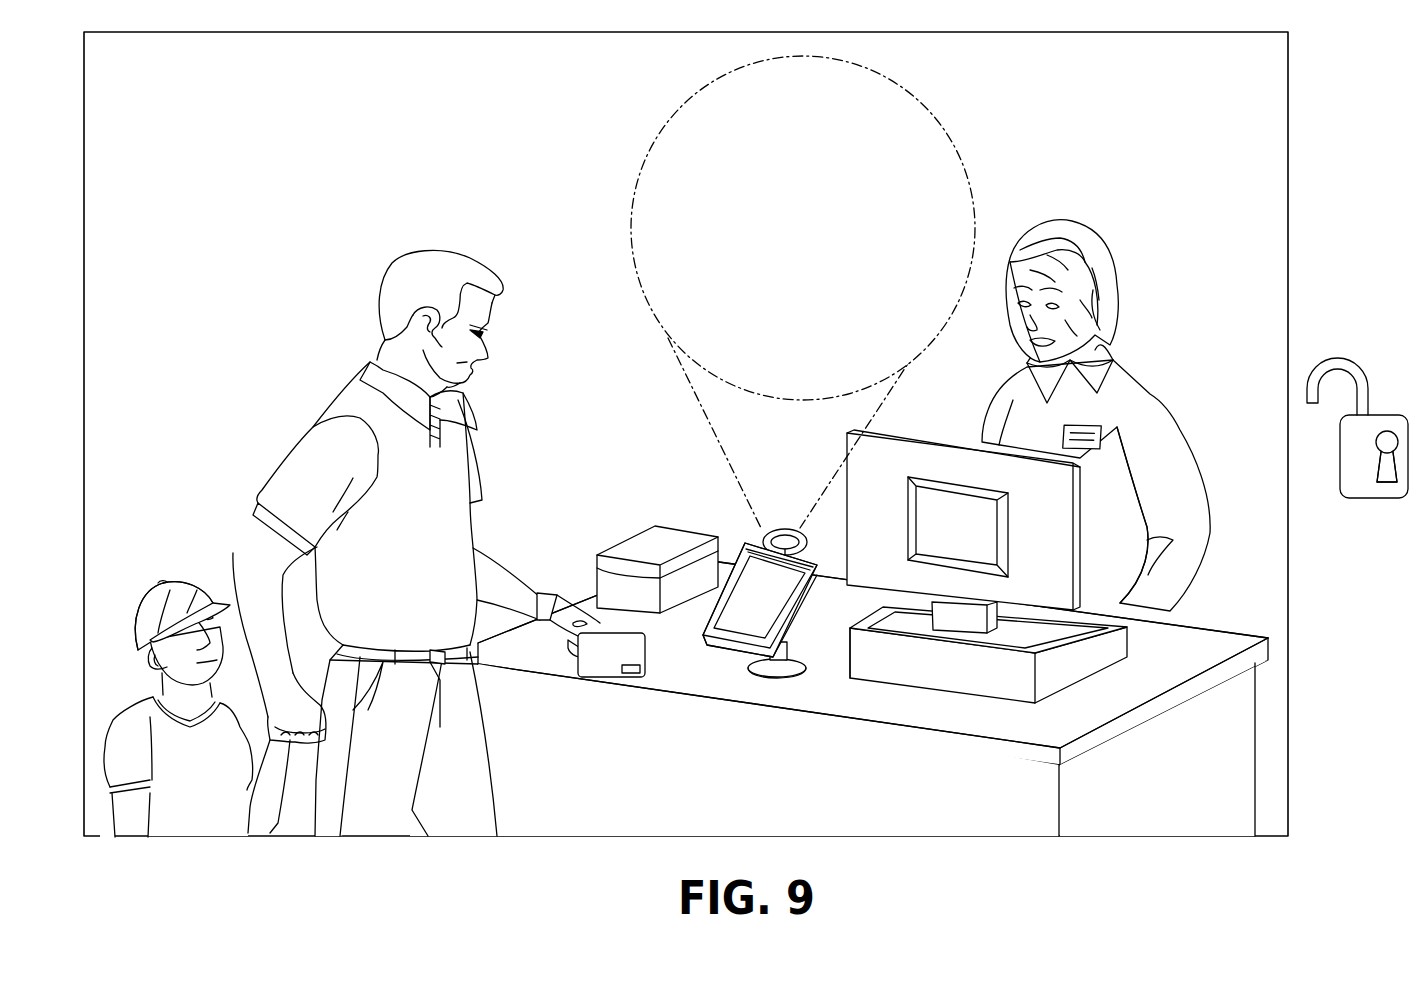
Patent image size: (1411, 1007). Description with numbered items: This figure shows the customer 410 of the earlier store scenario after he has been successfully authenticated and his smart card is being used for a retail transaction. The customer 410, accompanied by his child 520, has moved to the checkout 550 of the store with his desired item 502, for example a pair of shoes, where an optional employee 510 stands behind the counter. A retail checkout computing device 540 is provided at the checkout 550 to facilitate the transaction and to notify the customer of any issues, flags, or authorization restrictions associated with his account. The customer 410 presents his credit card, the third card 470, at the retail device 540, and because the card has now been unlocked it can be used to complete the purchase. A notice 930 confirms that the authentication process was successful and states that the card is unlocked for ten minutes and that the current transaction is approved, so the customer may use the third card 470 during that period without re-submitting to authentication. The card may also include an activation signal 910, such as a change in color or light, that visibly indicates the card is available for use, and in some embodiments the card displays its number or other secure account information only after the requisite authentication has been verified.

The customer 410 is at (425, 228).
The notice 930 is at (958, 150).
The employee 510 is at (1078, 214).
The child 520 is at (181, 567).
The item 502 is at (643, 550).
The third card 470 is at (600, 676).
The activation signal 910 is at (632, 676).
The retail checkout computing device 540 is at (742, 622).
The checkout 550 is at (1217, 749).